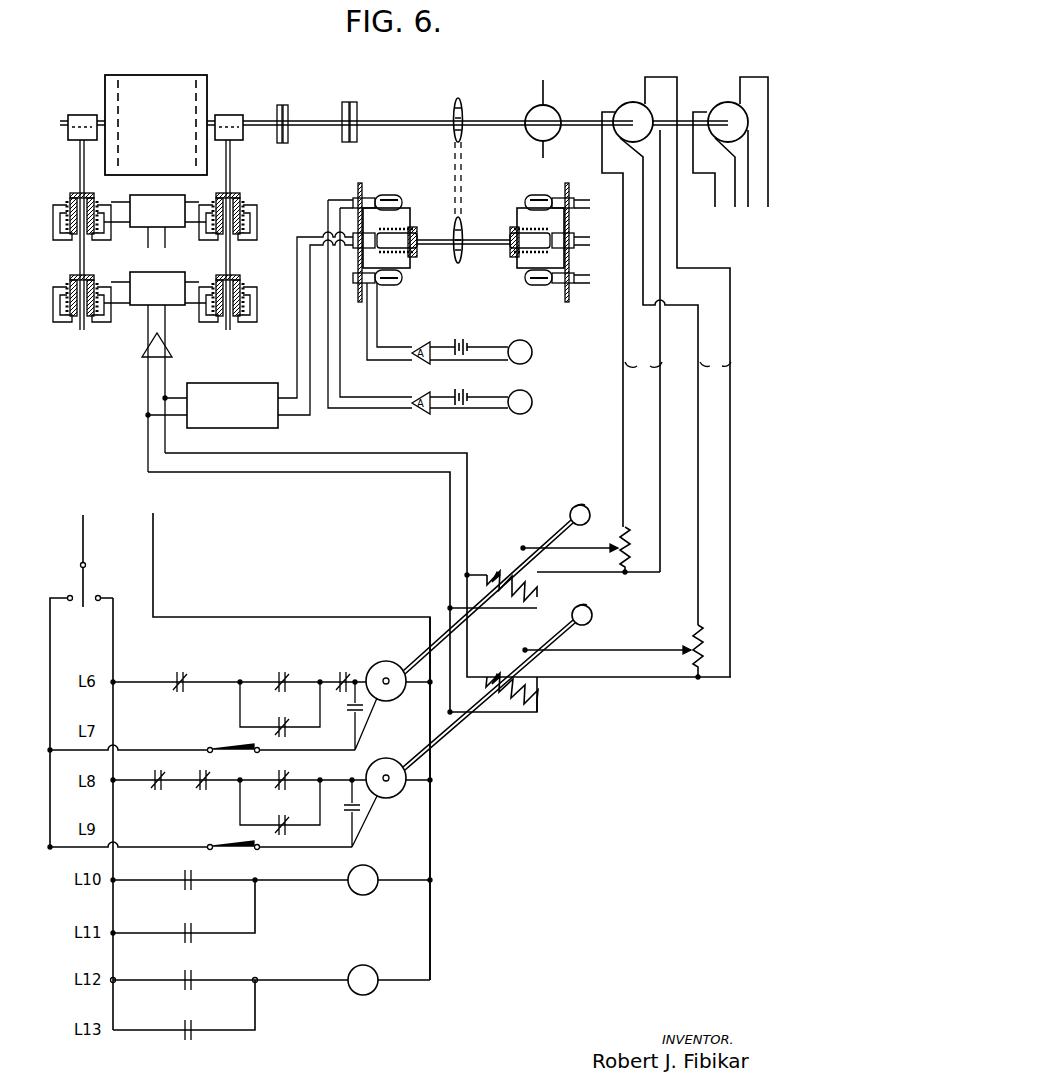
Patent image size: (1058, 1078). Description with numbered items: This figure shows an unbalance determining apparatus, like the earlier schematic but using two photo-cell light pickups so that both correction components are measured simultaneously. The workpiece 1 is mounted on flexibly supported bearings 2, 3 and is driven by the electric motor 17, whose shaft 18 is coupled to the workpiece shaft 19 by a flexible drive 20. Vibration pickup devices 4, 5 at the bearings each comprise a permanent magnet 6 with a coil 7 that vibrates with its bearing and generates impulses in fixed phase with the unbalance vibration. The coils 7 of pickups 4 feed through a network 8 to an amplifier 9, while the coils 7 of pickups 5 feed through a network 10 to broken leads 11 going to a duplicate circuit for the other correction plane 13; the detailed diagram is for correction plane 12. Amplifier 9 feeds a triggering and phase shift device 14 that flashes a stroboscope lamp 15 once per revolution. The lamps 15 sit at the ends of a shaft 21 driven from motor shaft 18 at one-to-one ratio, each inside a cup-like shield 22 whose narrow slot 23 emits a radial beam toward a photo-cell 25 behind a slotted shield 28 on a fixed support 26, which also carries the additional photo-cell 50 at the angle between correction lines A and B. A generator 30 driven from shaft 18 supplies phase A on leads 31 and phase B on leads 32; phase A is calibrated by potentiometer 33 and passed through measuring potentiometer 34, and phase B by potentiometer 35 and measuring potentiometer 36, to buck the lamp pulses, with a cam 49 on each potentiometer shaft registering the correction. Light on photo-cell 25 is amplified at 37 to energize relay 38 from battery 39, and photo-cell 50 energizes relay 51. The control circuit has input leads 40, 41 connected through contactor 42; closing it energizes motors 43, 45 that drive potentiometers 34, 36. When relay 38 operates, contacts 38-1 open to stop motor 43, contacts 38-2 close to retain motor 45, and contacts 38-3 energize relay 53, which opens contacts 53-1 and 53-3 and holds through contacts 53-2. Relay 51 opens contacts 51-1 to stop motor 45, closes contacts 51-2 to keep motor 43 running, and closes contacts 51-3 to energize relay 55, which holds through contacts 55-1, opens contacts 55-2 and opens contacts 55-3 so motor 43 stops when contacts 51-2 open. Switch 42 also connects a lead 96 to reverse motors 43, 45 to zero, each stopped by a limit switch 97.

The workpiece 1 is at (165, 75).
The bearing 2 is at (78, 115).
The bearing 3 is at (231, 115).
The vibration pickup device 4 is at (52, 300).
The vibration pickup device 5 is at (52, 216).
The permanent magnet 6 is at (53, 240).
The coil 7 is at (68, 196).
The electrical network 8 is at (143, 272).
The amplifier 9 is at (140, 349).
The electrical network 10 is at (150, 195).
The broken leads 11 is at (160, 240).
The correction plane 12 is at (116, 82).
The correction plane 13 is at (197, 82).
The triggering and phase shift device 14 is at (233, 383).
The stroboscope lamp 15 is at (415, 234).
The electric motor 17 is at (534, 108).
The motor shaft 18 is at (468, 112).
The workpiece shaft 19 is at (258, 118).
The flexible drive 20 is at (315, 118).
The shaft 21 is at (443, 246).
The cup-like shield 22 is at (412, 258).
The narrow slot 23 is at (405, 222).
The photo-cell 25 is at (393, 285).
The fixed support 26 is at (358, 186).
The slotted shield 28 is at (405, 210).
The generator 30 is at (633, 102).
The output leads 31 is at (643, 375).
The output leads 32 is at (715, 375).
The adjustable potentiometer 33 is at (630, 548).
The measuring potentiometer 34 is at (503, 557).
The adjustable potentiometer 35 is at (703, 632).
The measuring potentiometer 36 is at (503, 660).
The amplifier 37 is at (425, 341).
The relay 38 is at (528, 342).
The battery 39 is at (464, 339).
The input lead 40 is at (113, 642).
The input lead 41 is at (433, 818).
The contactor 42 is at (72, 576).
The motor 43 is at (386, 668).
The motor 45 is at (386, 767).
The cam 49 is at (580, 505).
The photo-cell 50 is at (388, 195).
The relay 51 is at (483, 395).
The relay 53 is at (373, 871).
The relay 55 is at (368, 968).
The lead 96 is at (50, 697).
The limit switch 97 is at (225, 742).
The contacts 53-1 is at (180, 672).
The contacts 51-2 is at (280, 672).
The contacts 38-1 is at (340, 672).
The contacts 55-3 is at (280, 709).
The contacts 38-2 is at (295, 775).
The contacts 55-2 is at (155, 790).
The contacts 51-1 is at (207, 790).
The contacts 53-3 is at (280, 807).
The contacts 38-3 is at (205, 874).
The contacts 53-2 is at (206, 925).
The contacts 51-3 is at (206, 973).
The contacts 55-1 is at (206, 1021).